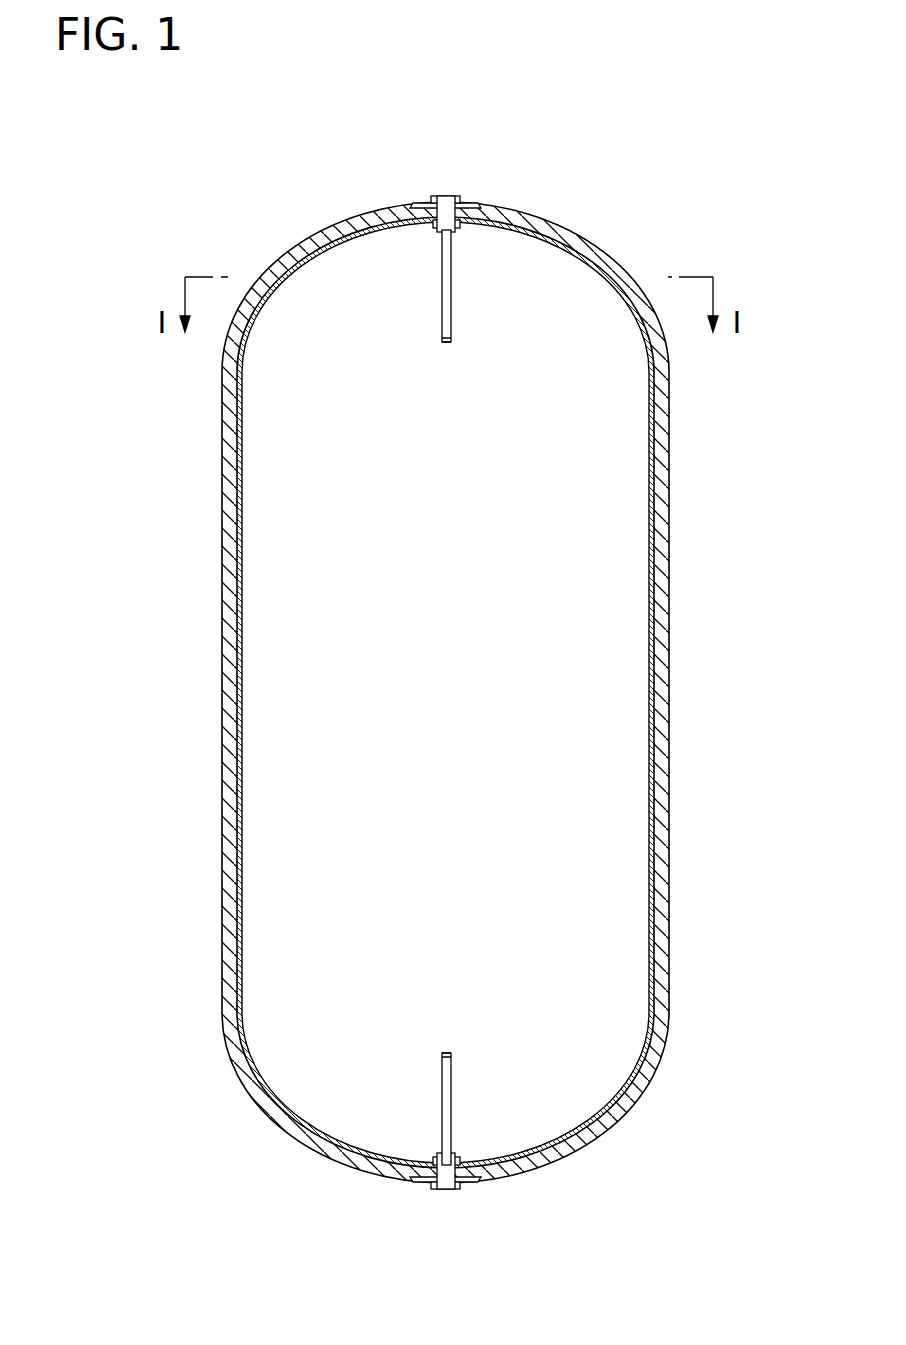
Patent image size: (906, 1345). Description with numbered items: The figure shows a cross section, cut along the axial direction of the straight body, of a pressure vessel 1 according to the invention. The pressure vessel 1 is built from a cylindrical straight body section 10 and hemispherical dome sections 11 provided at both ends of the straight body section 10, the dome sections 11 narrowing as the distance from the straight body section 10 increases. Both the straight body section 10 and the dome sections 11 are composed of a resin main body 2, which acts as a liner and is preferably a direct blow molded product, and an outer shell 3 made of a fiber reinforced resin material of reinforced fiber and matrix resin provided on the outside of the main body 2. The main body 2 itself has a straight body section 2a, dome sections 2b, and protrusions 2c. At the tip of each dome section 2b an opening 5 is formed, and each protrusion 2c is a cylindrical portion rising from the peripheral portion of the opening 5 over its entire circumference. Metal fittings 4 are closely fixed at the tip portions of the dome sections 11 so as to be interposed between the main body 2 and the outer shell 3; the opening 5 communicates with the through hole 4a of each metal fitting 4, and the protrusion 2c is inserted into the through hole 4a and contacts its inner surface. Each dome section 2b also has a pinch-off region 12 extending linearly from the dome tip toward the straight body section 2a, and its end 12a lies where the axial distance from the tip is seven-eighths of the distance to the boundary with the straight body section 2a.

The pressure vessel 1 is at (495, 672).
The main body 2 is at (445, 692).
The straight body section 2a is at (650, 617).
The dome sections 2b is at (632, 317).
The protrusions 2c is at (436, 226).
The outer shell 3 is at (484, 704).
The metal fittings 4 is at (438, 695).
The through hole 4a is at (446, 200).
The opening 5 is at (450, 232).
The straight body section 10 is at (495, 695).
The dome sections 11 is at (592, 243).
The pinch-off region 12 is at (418, 697).
The end of pinch-off region 12a is at (448, 345).